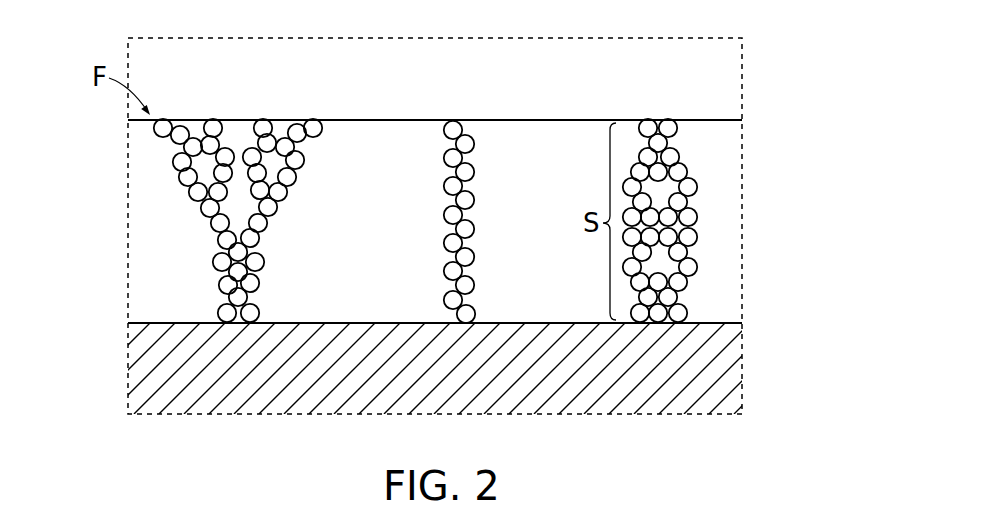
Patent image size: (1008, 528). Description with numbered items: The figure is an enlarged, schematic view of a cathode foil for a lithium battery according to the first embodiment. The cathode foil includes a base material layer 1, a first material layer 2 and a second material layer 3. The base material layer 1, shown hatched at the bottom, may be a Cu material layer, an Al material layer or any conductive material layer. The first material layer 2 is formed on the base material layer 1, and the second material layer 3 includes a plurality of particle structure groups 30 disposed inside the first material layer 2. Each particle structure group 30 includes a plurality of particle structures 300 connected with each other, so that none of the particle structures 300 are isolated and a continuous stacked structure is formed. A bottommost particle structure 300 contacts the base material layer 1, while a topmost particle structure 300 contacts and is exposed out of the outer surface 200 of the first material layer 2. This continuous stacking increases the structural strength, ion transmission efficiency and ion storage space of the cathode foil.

The base material layer 1 is at (738, 348).
The first material layer 2 is at (738, 133).
The outer surface 200 is at (549, 118).
The second material layer 3 is at (507, 202).
The particle structure group 30 is at (742, 220).
The particle structure 300 is at (681, 170).